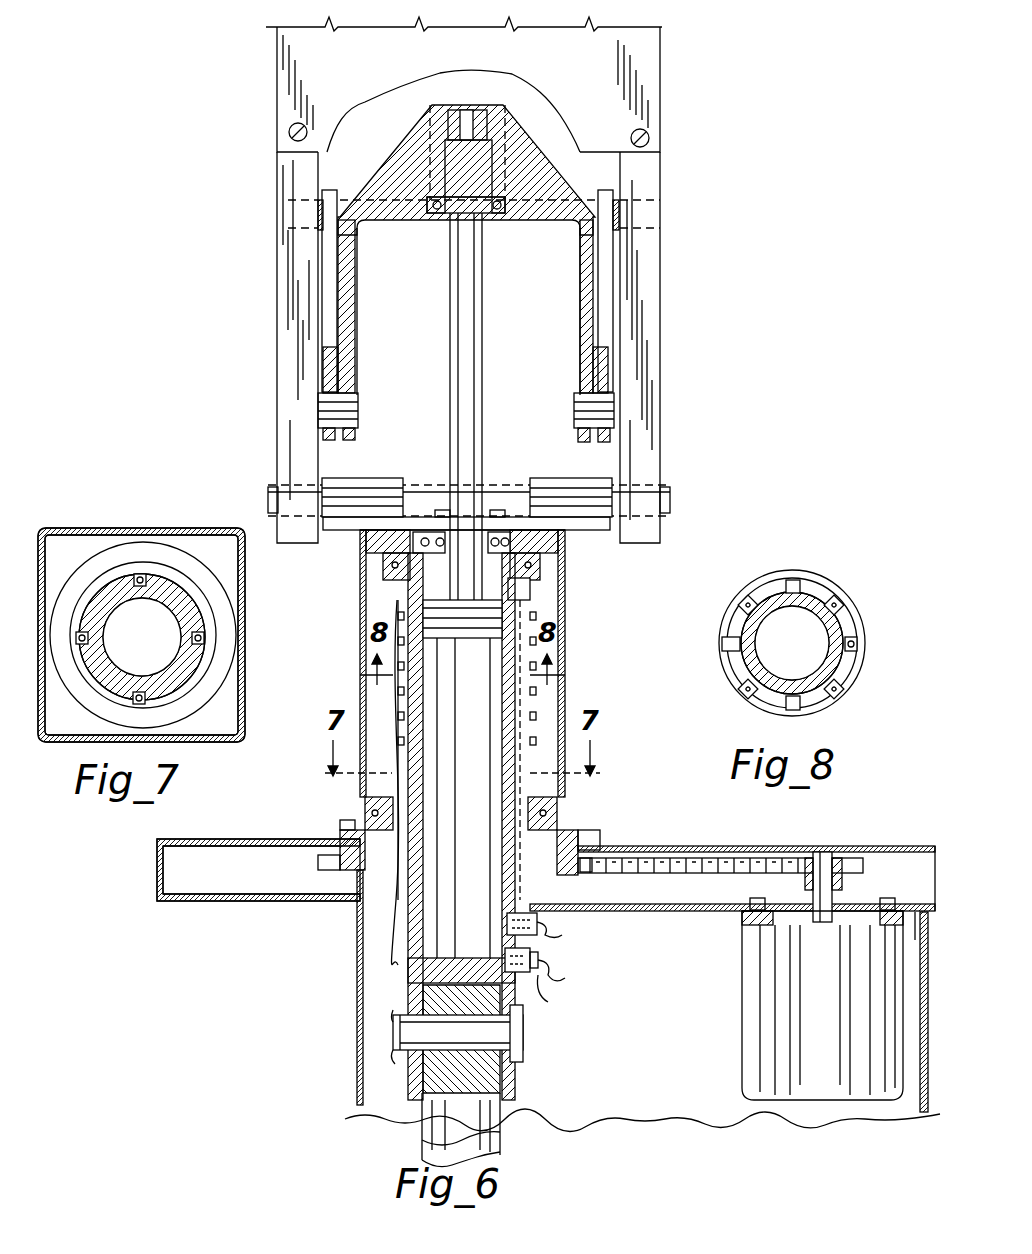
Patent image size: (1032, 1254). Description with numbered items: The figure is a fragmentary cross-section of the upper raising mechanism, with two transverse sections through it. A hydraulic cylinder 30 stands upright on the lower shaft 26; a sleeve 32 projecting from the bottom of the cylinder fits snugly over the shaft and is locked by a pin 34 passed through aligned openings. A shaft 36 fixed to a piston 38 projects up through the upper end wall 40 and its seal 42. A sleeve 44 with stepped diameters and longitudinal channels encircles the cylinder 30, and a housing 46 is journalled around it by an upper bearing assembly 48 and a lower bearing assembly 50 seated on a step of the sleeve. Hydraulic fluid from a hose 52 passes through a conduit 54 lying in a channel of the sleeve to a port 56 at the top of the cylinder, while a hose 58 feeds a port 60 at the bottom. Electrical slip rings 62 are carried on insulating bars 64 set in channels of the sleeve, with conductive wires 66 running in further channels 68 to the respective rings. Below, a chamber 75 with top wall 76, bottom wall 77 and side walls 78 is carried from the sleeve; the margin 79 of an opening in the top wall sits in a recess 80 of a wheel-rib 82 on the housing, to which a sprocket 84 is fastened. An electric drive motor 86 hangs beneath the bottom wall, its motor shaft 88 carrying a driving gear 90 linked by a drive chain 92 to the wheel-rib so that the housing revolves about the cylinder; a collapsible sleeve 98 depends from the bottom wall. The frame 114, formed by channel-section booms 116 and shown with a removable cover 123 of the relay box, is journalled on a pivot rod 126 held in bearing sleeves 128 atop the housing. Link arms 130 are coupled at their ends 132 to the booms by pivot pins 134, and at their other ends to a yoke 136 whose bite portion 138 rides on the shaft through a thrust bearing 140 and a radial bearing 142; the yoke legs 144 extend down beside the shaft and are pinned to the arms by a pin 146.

In FIG. 6, the shaft 26 is at (495, 1142).
In FIG. 6, the hydraulic cylinder 30 is at (415, 960).
In FIG. 8, the hydraulic cylinder 30 is at (808, 607).
In FIG. 6, the sleeve 32 is at (518, 1082).
In FIG. 6, the pin 34 is at (500, 1035).
In FIG. 6, the shaft 36 is at (480, 350).
In FIG. 6, the piston 38 is at (465, 618).
In FIG. 6, the upper end wall 40 is at (485, 545).
In FIG. 6, the seal 42 is at (432, 517).
In FIG. 6, the sleeve 44 is at (368, 900).
In FIG. 7, the sleeve 44 is at (175, 573).
In FIG. 6, the housing 46 is at (565, 616).
In FIG. 7, the housing 46 is at (68, 530).
In FIG. 6, the bearing assembly 48 is at (542, 568).
In FIG. 6, the bearing assembly 50 is at (557, 815).
In FIG. 6, the hose 52 is at (545, 962).
In FIG. 6, the conduit 54 is at (540, 930).
In FIG. 7, the conduit 54 is at (205, 637).
In FIG. 8, the conduit 54 is at (856, 640).
In FIG. 6, the port 56 is at (520, 583).
In FIG. 6, the hose 58 is at (550, 1000).
In FIG. 6, the port 60 is at (482, 918).
In FIG. 6, the electrical slip rings 62 is at (400, 610).
In FIG. 8, the electrical slip rings 62 is at (855, 548).
In FIG. 8, the insulating bars 64 is at (748, 600).
In FIG. 6, the conductive wires 66 is at (375, 935).
In FIG. 7, the conductive wires 66 is at (138, 574).
In FIG. 7, the channels 68 is at (145, 574).
In FIG. 8, the channels 68 is at (793, 580).
In FIG. 6, the chamber 75 is at (668, 885).
In FIG. 6, the top wall 76 is at (228, 844).
In FIG. 6, the bottom wall 77 is at (212, 902).
In FIG. 6, the side walls 78 is at (158, 872).
In FIG. 6, the margin 79 is at (607, 850).
In FIG. 6, the circumferential recess 80 is at (332, 838).
In FIG. 6, the wheel-rib 82 is at (366, 812).
In FIG. 6, the sprocket 84 is at (318, 865).
In FIG. 6, the electric drive motor 86 is at (790, 985).
In FIG. 6, the motor shaft 88 is at (845, 900).
In FIG. 6, the driving gear 90 is at (860, 822).
In FIG. 6, the drive chain 92 is at (720, 850).
In FIG. 6, the collapsible sleeve 98 is at (358, 1018).
In FIG. 6, the frame 114 is at (276, 415).
In FIG. 6, the booms 116 is at (300, 357).
In FIG. 6, the removable cover 123 is at (650, 52).
In FIG. 6, the pivot rod 126 is at (666, 498).
In FIG. 6, the bearing sleeves 128 is at (360, 480).
In FIG. 6, the link arms 130 is at (328, 305).
In FIG. 6, the ends 132 is at (330, 188).
In FIG. 6, the pivot pins 134 is at (305, 210).
In FIG. 6, the yoke 136 is at (530, 165).
In FIG. 6, the bite portion 138 is at (420, 218).
In FIG. 6, the thrust bearing 140 is at (472, 120).
In FIG. 6, the radial bearing 142 is at (490, 218).
In FIG. 6, the legs 144 is at (350, 290).
In FIG. 6, the pin 146 is at (352, 402).